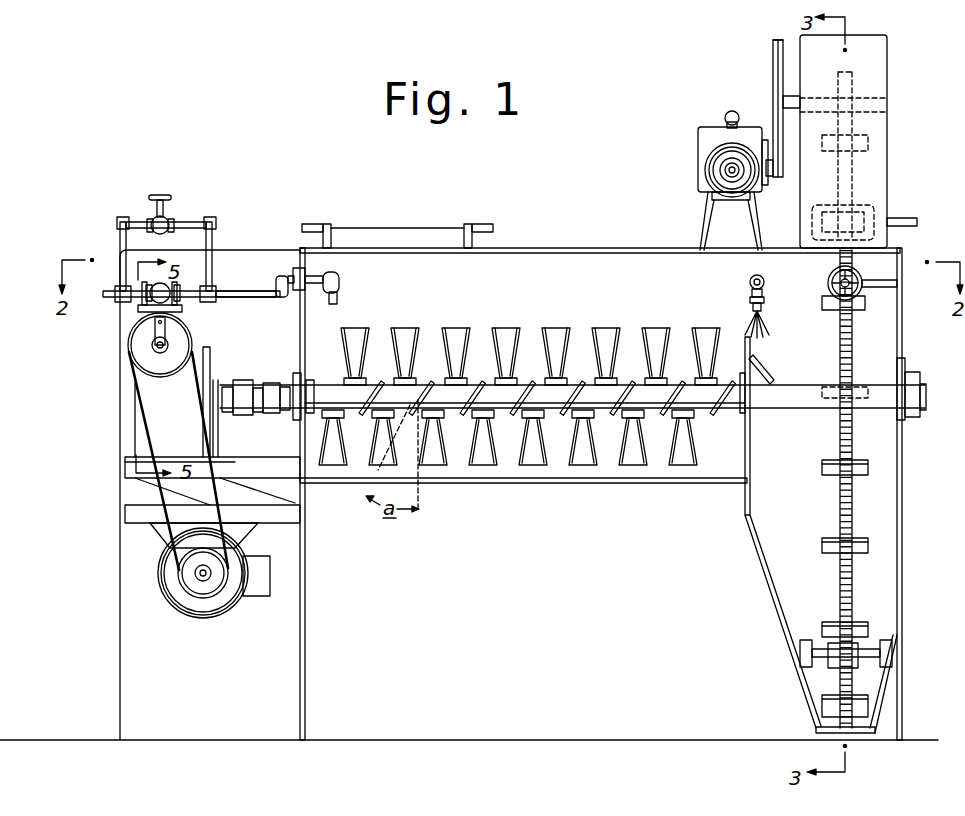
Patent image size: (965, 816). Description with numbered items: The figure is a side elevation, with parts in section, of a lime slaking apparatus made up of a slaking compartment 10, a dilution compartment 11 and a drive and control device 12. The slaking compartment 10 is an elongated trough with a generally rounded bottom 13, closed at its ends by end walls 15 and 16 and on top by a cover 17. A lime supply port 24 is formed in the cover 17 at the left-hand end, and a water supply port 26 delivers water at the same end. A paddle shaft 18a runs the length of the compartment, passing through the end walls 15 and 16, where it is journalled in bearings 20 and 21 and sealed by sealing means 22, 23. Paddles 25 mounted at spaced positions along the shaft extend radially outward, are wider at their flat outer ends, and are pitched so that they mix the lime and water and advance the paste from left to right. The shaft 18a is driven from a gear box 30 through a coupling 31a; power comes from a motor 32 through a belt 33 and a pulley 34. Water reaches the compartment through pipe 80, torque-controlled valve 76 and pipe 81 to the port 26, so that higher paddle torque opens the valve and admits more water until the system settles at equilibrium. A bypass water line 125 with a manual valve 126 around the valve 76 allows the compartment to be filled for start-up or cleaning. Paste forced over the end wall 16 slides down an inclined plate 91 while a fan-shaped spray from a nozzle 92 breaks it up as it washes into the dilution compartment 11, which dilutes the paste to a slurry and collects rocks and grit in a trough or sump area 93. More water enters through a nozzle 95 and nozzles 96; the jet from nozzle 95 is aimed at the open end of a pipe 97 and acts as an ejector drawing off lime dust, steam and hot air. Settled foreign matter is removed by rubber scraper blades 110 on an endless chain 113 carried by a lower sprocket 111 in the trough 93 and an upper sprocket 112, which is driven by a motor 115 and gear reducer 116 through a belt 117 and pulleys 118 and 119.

The slaking compartment 10 is at (569, 262).
The dilution compartment 11 is at (747, 513).
The drive and control device 12 is at (228, 258).
The rounded bottom 13 is at (463, 483).
The end wall 15 is at (300, 333).
The end wall 16 is at (752, 443).
The cover 17 is at (523, 247).
The shaft 18a is at (320, 483).
The bearing 20 is at (295, 378).
The bearing 21 is at (912, 382).
The sealing means 22 is at (312, 382).
The sealing means 23 is at (743, 375).
The lime supply port 24 is at (379, 236).
The paddles 25 is at (510, 332).
The water supply port 26 is at (340, 300).
The gear box 30 is at (211, 351).
The coupling 31a is at (243, 407).
The motor 32 is at (204, 618).
The belt 33 is at (160, 545).
The pulley 34 is at (134, 345).
The valve 76 is at (166, 288).
The pipe 80 is at (113, 285).
The pipe 81 is at (232, 292).
The inclined plate 91 is at (773, 378).
The nozzle 92 is at (751, 300).
The trough or sump area 93 is at (818, 730).
The nozzle 95 is at (840, 285).
The nozzles 96 is at (800, 252).
The pipe 97 is at (863, 300).
The scraper blades 110 is at (862, 545).
The lower sprocket 111 is at (862, 648).
The upper sprocket 112 is at (890, 77).
The endless chain or belt 113 is at (855, 570).
The motor 115 is at (722, 171).
The gear reducer 116 is at (707, 131).
The belt 117 is at (774, 72).
The pulley 118 is at (783, 176).
The pulley 119 is at (774, 48).
The bypass water line 125 is at (122, 245).
The manual valve 126 is at (167, 217).